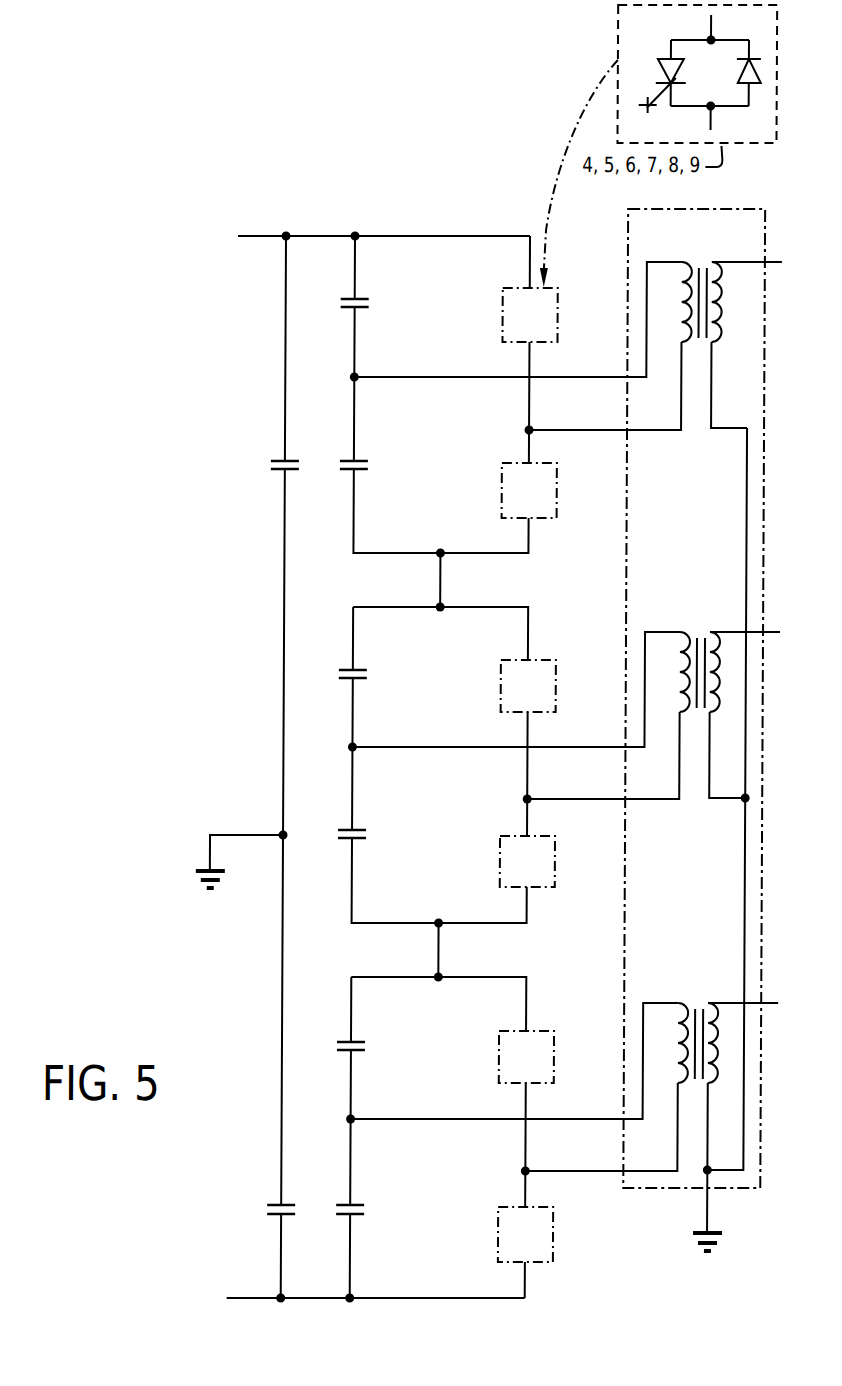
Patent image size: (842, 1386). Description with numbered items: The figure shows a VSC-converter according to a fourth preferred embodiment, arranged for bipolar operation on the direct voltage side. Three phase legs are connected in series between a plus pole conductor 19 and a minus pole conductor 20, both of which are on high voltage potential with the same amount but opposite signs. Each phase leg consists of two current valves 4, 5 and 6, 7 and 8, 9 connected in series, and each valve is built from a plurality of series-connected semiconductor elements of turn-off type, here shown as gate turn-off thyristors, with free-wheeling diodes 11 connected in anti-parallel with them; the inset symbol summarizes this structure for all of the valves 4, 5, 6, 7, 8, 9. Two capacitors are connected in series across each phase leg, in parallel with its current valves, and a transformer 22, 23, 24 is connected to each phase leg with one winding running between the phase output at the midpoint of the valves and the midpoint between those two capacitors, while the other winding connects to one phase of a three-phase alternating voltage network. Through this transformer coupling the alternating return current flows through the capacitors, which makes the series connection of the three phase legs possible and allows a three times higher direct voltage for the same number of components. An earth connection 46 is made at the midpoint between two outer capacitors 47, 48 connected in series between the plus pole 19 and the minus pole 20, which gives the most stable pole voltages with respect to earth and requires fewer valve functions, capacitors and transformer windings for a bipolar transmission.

The current valve 4 is at (503, 306).
The current valve 5 is at (558, 488).
The current valve 6 is at (503, 678).
The current valve 7 is at (558, 862).
The current valve 8 is at (503, 1050).
The current valve 9 is at (558, 1233).
The free-wheeling diode 11 is at (760, 68).
The pole conductor 19 is at (264, 238).
The pole conductor 20 is at (249, 1301).
The transformer 22 is at (697, 264).
The transformer 23 is at (683, 638).
The transformer 24 is at (683, 1009).
The earth connection 46 is at (229, 835).
The capacitor 47 is at (280, 460).
The capacitor 48 is at (280, 1205).